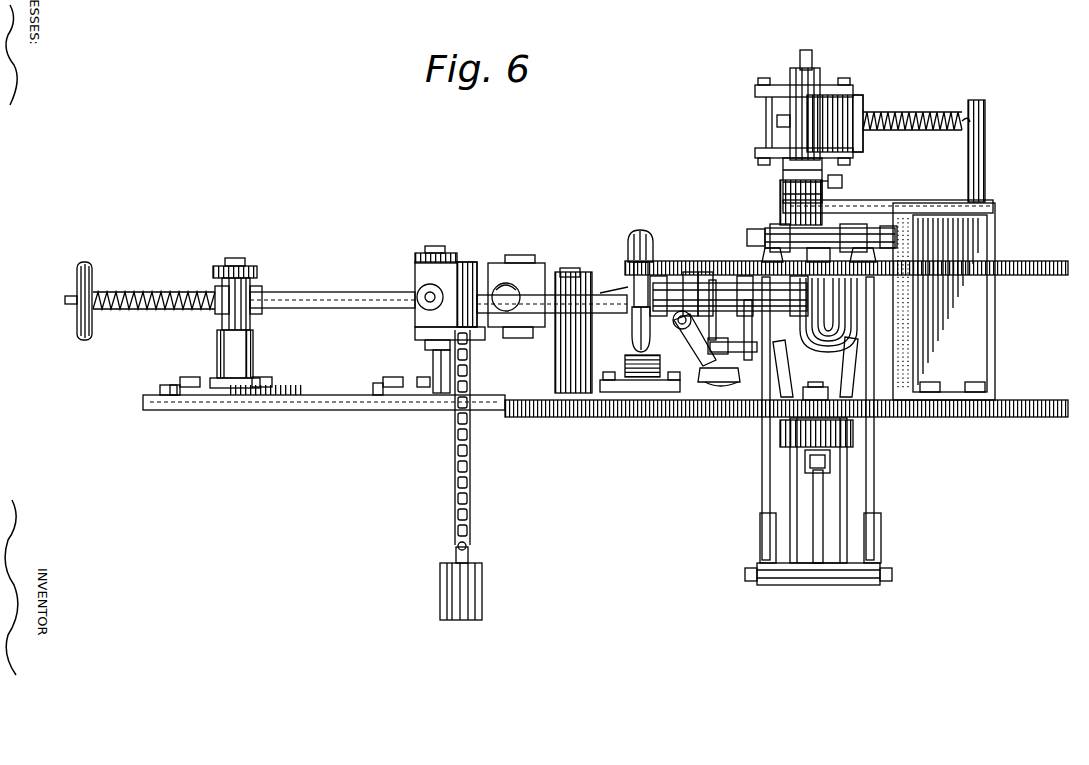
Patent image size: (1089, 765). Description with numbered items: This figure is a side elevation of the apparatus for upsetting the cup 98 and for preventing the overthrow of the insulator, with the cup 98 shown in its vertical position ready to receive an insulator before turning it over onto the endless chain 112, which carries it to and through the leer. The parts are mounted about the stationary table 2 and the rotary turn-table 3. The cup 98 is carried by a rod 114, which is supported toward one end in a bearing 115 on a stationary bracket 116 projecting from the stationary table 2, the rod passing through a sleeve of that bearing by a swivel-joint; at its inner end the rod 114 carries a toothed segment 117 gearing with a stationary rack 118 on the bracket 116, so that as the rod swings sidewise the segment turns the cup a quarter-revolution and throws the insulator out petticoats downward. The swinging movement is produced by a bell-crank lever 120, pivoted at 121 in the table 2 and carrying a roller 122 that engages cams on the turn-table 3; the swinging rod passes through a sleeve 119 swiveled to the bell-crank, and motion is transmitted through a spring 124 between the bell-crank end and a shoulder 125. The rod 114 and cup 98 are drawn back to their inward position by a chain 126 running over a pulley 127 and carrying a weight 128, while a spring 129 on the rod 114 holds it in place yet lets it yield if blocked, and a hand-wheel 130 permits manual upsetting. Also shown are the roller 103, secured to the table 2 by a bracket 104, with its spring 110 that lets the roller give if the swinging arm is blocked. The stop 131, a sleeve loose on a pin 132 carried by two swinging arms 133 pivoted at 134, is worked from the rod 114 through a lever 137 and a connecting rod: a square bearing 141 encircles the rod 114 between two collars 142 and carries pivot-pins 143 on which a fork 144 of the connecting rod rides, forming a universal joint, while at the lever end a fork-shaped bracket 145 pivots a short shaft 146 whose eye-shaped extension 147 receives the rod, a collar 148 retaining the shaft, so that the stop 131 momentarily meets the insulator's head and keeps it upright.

The stationary table 2 is at (1023, 399).
The rotary turn-table 3 is at (1012, 260).
The cup 98 is at (814, 320).
The roller 103 is at (863, 99).
The bracket 104 is at (862, 250).
The spring 110 is at (928, 114).
The endless chain 112 is at (803, 388).
The rod 114 is at (305, 292).
The bearing 115 is at (252, 263).
The stationary bracket 116 is at (318, 398).
The toothed segment 117 is at (645, 243).
The stationary rack 118 is at (624, 356).
The sleeve 119 is at (427, 318).
The bell-crank lever 120 is at (537, 307).
The pivot of bell-crank lever 121 is at (568, 272).
The roller 122 is at (614, 262).
The spring 124 is at (462, 268).
The shoulder 125 is at (500, 268).
The chain 126 is at (470, 507).
The pulley 127 is at (447, 341).
The weight 128 is at (482, 598).
The spring 129 is at (133, 290).
The hand-wheel 130 is at (92, 338).
The stop 131 is at (788, 237).
The pin 132 is at (760, 243).
The swinging arms 133 is at (878, 468).
The pivot of swinging arms 134 is at (757, 572).
The lever 137 is at (836, 256).
The square bearing 141 is at (705, 278).
The collars 142 is at (658, 278).
The pivot-pins 143 is at (689, 338).
The fork 144 is at (688, 273).
The fork-shaped bracket 145 is at (760, 330).
The short shaft 146 is at (711, 346).
The eye-shaped extension 147 is at (728, 378).
The collar 148 is at (714, 338).